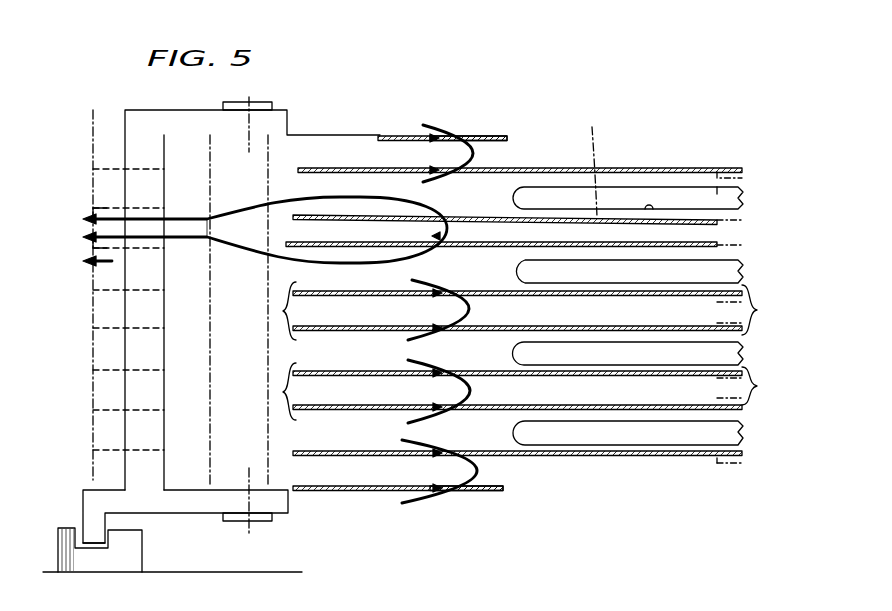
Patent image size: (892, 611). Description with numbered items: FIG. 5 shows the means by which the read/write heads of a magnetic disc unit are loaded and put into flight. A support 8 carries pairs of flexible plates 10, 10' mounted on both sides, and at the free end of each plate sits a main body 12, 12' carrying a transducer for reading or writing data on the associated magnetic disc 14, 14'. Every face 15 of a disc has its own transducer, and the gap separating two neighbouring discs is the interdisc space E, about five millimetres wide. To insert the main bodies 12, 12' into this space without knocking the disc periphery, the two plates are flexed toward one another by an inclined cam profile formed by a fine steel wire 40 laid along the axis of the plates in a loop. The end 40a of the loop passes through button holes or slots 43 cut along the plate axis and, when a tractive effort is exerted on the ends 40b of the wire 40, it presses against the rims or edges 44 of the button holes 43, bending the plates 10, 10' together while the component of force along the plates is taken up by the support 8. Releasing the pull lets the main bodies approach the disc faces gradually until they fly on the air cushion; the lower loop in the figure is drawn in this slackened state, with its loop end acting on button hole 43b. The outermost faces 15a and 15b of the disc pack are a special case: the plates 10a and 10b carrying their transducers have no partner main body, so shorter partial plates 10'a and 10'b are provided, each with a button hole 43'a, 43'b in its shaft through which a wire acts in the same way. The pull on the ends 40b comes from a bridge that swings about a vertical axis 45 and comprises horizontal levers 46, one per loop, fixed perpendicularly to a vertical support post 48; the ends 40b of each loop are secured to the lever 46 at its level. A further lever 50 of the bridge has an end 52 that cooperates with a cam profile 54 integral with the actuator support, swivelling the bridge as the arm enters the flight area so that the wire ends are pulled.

The support 8 is at (358, 227).
The flexible plate 10 is at (597, 160).
The flexible plate 10a is at (537, 168).
The flexible plate 10b is at (590, 457).
The flexible plate 10' is at (517, 311).
The partial flexible plate 10'a is at (442, 132).
The partial flexible plate 10'b is at (398, 514).
The main body 12 is at (739, 160).
The main body 12' is at (704, 482).
The magnetic disc 14 is at (628, 156).
The magnetic disc 14' is at (629, 294).
The face of the disc 15 is at (653, 209).
The upper face 15a is at (697, 187).
The lower face 15b is at (637, 446).
The steel wire 40 is at (242, 213).
The end of the loop 40a is at (413, 236).
The ends of the steel wire 40b is at (235, 225).
The button hole 43 is at (514, 214).
The button hole 43b is at (478, 446).
The button hole 43'a is at (475, 114).
The button hole 43'b is at (477, 514).
The rims or edges of the button holes 44 is at (432, 309).
The vertical axis 45 is at (265, 102).
The lever 46 is at (155, 117).
The support post 48 is at (137, 358).
The lever 50 is at (105, 488).
The end of lever 52 is at (87, 523).
The cam profile 54 is at (107, 542).
The interdisc space E is at (283, 392).